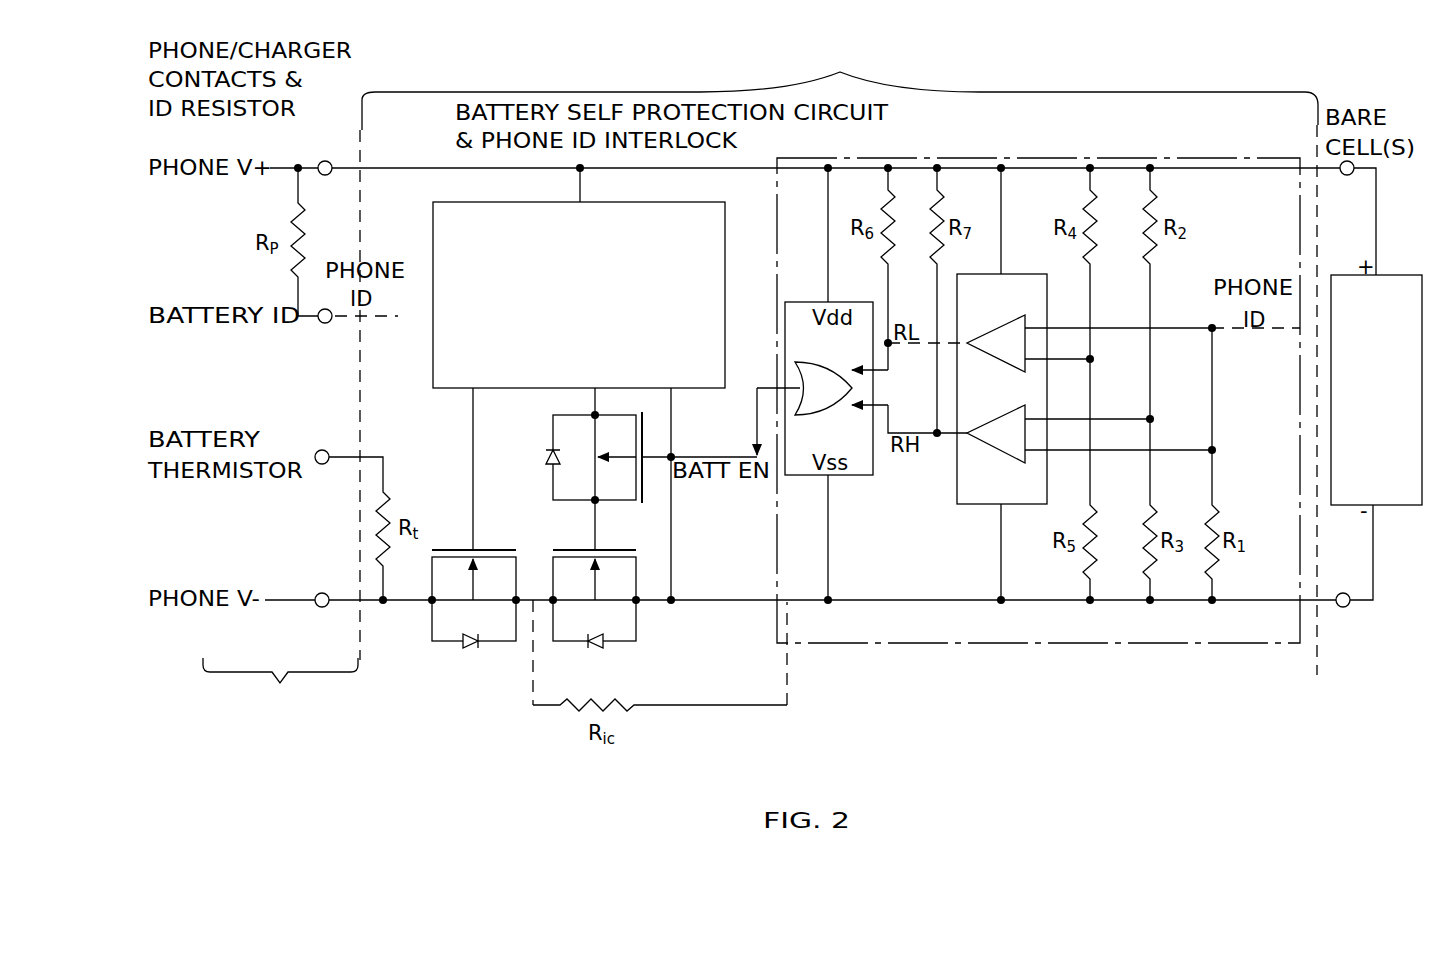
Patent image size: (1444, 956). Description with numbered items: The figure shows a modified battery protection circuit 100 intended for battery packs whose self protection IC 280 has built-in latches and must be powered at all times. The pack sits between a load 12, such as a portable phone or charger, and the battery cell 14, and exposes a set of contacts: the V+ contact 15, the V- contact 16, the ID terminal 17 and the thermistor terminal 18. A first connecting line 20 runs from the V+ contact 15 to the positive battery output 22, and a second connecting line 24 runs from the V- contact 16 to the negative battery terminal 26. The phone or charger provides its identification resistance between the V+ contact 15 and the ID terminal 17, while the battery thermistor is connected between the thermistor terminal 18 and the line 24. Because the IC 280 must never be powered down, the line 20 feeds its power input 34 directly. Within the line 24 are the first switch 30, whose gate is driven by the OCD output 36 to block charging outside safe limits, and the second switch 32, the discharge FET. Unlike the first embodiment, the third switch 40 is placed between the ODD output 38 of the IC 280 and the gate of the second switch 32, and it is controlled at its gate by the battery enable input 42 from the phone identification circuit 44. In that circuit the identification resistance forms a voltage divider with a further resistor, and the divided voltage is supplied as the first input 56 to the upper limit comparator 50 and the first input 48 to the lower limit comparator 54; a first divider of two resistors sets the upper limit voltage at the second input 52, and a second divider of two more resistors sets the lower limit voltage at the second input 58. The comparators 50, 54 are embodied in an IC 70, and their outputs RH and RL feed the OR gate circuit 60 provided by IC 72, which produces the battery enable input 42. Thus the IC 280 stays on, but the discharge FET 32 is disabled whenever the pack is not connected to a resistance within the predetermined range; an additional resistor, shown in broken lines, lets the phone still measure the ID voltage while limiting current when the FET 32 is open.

The load 12 is at (280, 686).
The battery cell 14 is at (1392, 275).
The V+ contact 15 is at (340, 152).
The V- contact 16 is at (335, 585).
The ID terminal 17 is at (330, 322).
The thermistor terminal 18 is at (334, 443).
The first connecting line 20 is at (447, 169).
The positive battery output 22 is at (1350, 175).
The second connecting line 24 is at (715, 602).
The negative battery terminal 26 is at (1347, 607).
The first switch 30 is at (430, 632).
The second switch 32 is at (640, 628).
The power input 34 is at (578, 200).
The OCD output 36 is at (473, 389).
The ODD output 38 is at (595, 389).
The third switch 40 is at (648, 488).
The battery enable input 42 is at (703, 455).
The phone identification circuit 44 is at (1035, 645).
The first input of lower limit comparator 48 is at (1025, 333).
The upper limit comparator 50 is at (995, 455).
The second input of upper limit comparator 52 is at (1025, 424).
The lower limit comparator 54 is at (995, 327).
The first input of upper limit comparator 56 is at (1025, 456).
The second input of lower limit comparator 58 is at (1025, 364).
The OR gate circuit 60 is at (797, 378).
The comparator IC 70 is at (953, 478).
The OR gate IC 72 is at (850, 478).
The modified battery protection circuit 100 is at (840, 84).
The battery self protection IC 280 is at (668, 202).